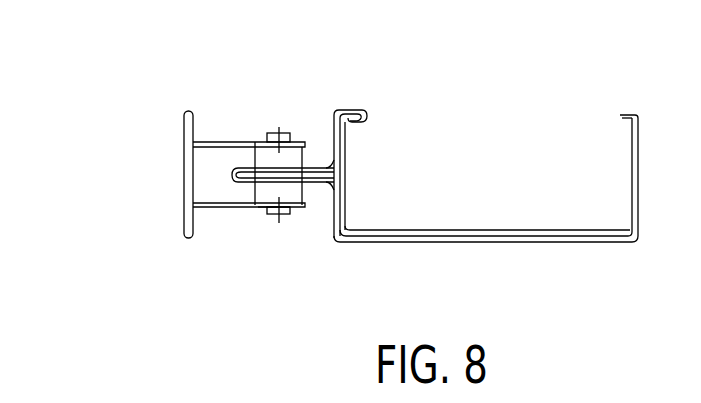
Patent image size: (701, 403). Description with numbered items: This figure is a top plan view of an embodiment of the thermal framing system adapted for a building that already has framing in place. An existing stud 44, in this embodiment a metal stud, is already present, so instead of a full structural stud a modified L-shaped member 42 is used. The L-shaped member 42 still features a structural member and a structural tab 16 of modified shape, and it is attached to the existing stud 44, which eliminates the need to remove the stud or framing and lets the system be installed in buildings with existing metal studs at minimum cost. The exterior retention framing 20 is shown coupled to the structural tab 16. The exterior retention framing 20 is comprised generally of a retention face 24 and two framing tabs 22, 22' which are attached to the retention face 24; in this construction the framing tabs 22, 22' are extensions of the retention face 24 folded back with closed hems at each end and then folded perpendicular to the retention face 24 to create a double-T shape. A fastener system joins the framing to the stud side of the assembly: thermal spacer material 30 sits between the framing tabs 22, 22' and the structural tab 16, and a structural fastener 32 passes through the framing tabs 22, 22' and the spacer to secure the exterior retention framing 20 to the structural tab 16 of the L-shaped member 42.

The structural tab 16 is at (318, 154).
The exterior retention framing 20 is at (180, 170).
The framing tab 22 is at (270, 107).
The framing tab 22' is at (295, 249).
The retention face 24 is at (176, 164).
The thermal spacer material 30 is at (246, 191).
The structural fastener 32 is at (264, 217).
The L-shaped member 42 is at (486, 155).
The existing stud 44 is at (503, 218).